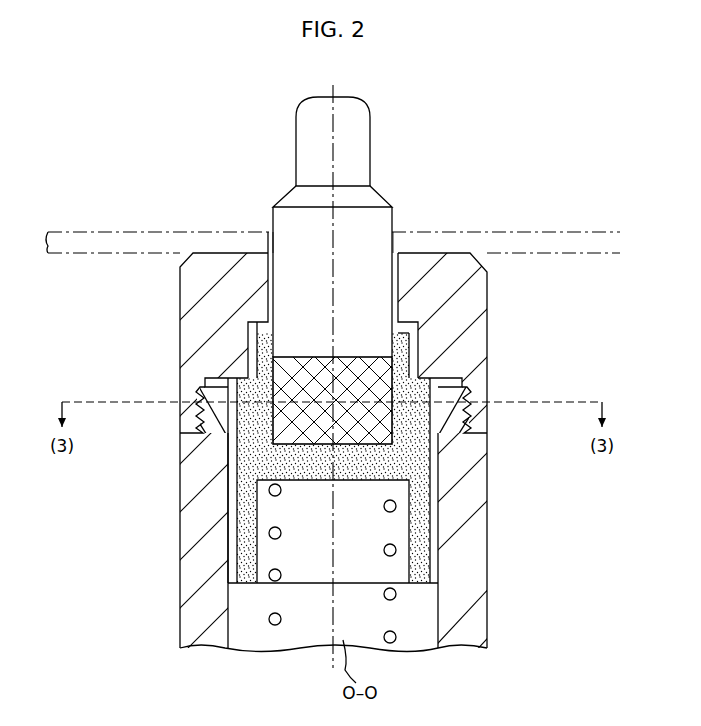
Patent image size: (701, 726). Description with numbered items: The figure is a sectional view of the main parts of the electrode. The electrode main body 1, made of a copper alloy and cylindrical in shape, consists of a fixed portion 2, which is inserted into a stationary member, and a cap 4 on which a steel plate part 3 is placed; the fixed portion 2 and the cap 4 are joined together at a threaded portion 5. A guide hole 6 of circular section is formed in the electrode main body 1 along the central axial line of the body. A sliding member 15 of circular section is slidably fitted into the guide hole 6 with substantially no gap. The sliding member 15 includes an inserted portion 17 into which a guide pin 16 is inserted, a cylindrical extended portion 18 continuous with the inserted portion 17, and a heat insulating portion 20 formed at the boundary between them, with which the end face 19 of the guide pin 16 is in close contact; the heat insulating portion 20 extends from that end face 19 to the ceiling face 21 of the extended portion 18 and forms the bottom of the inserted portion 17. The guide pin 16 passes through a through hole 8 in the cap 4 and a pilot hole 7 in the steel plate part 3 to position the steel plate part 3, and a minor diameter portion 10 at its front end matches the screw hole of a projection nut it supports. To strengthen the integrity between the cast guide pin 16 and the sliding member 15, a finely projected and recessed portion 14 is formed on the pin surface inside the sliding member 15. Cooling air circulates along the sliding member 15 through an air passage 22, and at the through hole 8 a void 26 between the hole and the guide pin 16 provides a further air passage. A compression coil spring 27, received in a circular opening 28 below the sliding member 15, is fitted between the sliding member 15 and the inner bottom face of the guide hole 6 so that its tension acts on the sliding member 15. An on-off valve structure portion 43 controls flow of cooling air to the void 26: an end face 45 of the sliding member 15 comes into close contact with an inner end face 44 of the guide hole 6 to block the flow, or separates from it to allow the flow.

The electrode main body 1 is at (165, 575).
The fixed portion 2 is at (180, 623).
The steel plate part 3 is at (95, 232).
The cap 4 is at (180, 276).
The threaded portion 5 is at (200, 413).
The guide hole 6 is at (240, 625).
The pilot hole 7 is at (268, 250).
The through hole 8 is at (408, 296).
The minor diameter portion 10 is at (371, 106).
The projected and recessed portion 14 is at (313, 385).
The sliding member 15 is at (412, 463).
The guide pin 16 is at (393, 218).
The inserted portion 17 is at (466, 424).
The extended portion 18 is at (420, 531).
The end face 19 is at (300, 462).
The heat insulating portion 20 is at (310, 480).
The ceiling face 21 is at (365, 480).
The air passage 22 is at (232, 504).
The void 26 is at (262, 305).
The compression coil spring 27 is at (235, 545).
The opening 28 is at (307, 570).
The on-off valve structure portion 43 is at (240, 372).
The inner end face 44 is at (462, 395).
The end face 45 is at (420, 372).